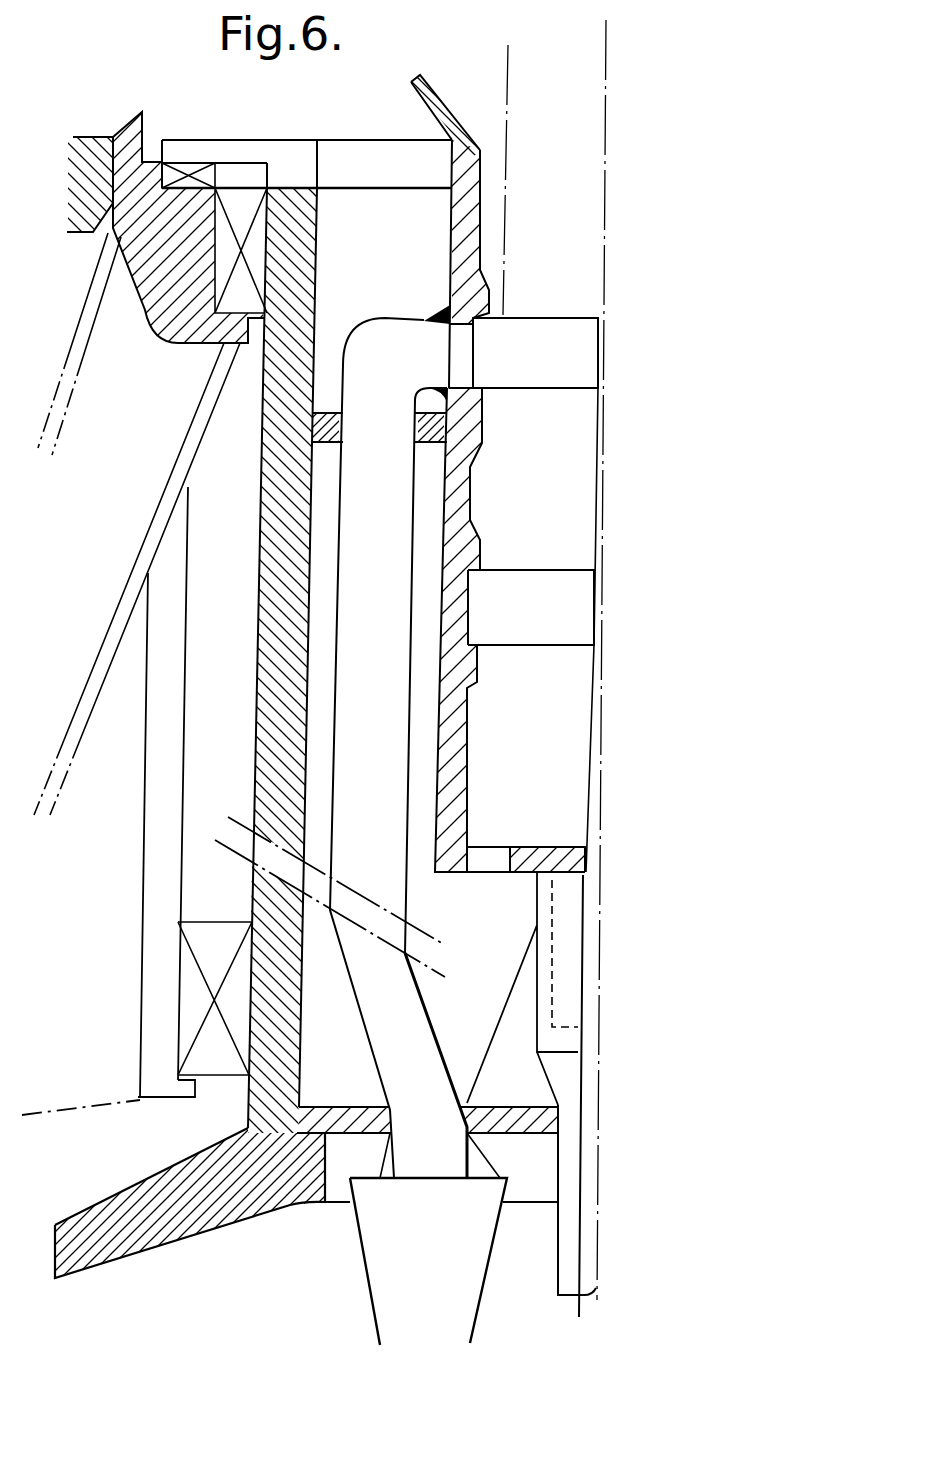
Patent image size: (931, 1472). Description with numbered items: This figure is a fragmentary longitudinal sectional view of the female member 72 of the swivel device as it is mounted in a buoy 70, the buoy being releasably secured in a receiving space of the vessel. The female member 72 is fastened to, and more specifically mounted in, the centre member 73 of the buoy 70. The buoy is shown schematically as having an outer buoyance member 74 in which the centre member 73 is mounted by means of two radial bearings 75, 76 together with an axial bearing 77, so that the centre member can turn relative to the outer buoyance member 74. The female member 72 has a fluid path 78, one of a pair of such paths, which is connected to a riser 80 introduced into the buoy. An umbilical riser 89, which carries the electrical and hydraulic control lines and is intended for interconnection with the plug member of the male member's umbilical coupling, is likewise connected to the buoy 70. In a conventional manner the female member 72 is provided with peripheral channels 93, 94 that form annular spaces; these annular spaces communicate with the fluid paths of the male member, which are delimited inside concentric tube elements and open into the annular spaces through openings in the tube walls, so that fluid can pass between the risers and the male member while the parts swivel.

The buoy 70 is at (232, 1221).
The female member 72 is at (466, 798).
The centre member 73 is at (280, 623).
The outer buoyance member 74 is at (92, 1086).
The radial bearing 75 is at (187, 992).
The radial bearing 76 is at (200, 345).
The axial bearing 77 is at (187, 162).
The fluid path 78 is at (452, 350).
The riser 80 is at (388, 1032).
The umbilical riser 89 is at (563, 1257).
The peripheral channel 93 is at (547, 376).
The peripheral channel 94 is at (540, 627).